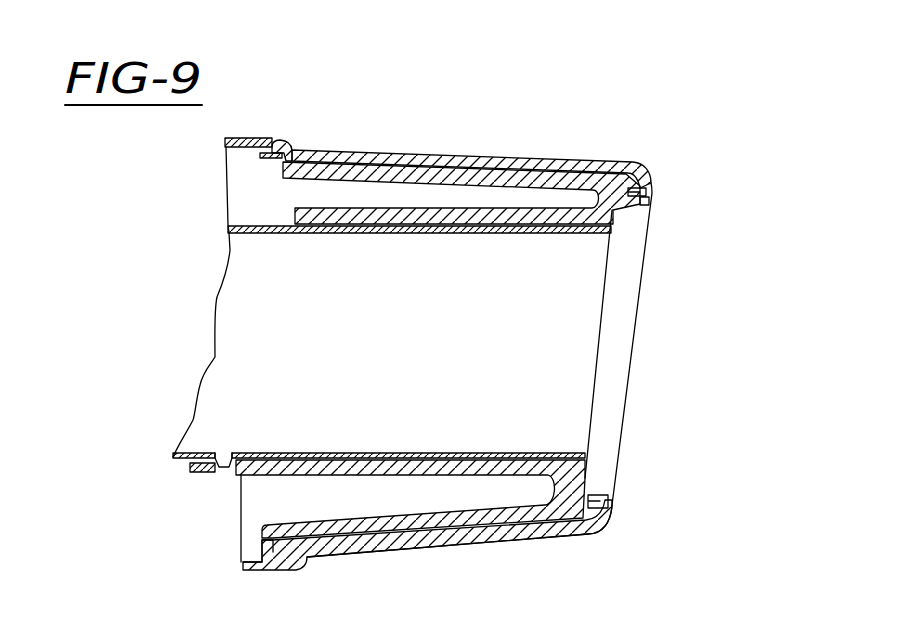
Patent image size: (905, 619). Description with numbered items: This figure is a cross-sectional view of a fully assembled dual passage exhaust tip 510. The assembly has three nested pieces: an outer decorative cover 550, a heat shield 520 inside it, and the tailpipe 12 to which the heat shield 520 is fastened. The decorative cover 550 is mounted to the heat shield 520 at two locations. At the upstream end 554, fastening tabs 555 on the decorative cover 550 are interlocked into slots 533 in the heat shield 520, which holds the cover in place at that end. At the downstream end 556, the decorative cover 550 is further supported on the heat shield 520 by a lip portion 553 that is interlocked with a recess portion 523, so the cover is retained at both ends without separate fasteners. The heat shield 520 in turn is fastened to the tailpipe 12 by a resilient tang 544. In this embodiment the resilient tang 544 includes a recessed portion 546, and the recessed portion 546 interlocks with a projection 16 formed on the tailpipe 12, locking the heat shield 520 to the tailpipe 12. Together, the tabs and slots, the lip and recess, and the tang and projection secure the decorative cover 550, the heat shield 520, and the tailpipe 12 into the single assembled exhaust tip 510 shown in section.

The dual passage exhaust tip 510 is at (340, 132).
The fastening tabs 555 is at (267, 148).
The decorative cover 550 is at (573, 158).
The lip portion 553 is at (640, 195).
The recess portion 523 is at (646, 190).
The slots 533 is at (282, 158).
The heat shield 520 is at (340, 224).
The upstream end 554 is at (172, 314).
The projection 16 is at (228, 453).
The tailpipe 12 is at (313, 452).
The resilient tang 544 is at (200, 472).
The recessed portion 546 is at (232, 474).
The downstream end 556 is at (652, 457).